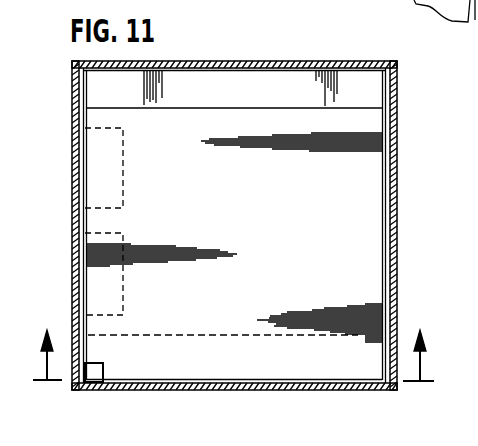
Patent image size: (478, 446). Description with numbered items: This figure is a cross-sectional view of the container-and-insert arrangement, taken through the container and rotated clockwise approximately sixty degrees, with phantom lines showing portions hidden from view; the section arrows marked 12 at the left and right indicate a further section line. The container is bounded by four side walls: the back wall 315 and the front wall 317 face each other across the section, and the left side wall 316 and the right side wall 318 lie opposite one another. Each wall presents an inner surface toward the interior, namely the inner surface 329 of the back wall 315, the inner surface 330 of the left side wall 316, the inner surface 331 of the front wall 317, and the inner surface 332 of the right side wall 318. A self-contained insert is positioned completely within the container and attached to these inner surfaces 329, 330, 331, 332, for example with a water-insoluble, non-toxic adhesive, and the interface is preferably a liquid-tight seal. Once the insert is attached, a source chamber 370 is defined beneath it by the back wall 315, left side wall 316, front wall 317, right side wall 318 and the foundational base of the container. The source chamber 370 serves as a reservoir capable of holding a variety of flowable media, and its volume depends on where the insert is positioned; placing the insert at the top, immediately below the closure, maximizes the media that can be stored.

The section line of FIG. 12 is at (233, 336).
The back wall 315 is at (80, 247).
The left side wall 316 is at (173, 389).
The front wall 317 is at (396, 256).
The right side wall 318 is at (333, 62).
The inner surface 329 is at (88, 131).
The inner surface 330 is at (320, 367).
The inner surface 331 is at (388, 172).
The inner surface 332 is at (232, 68).
The source chamber 370 is at (324, 12).